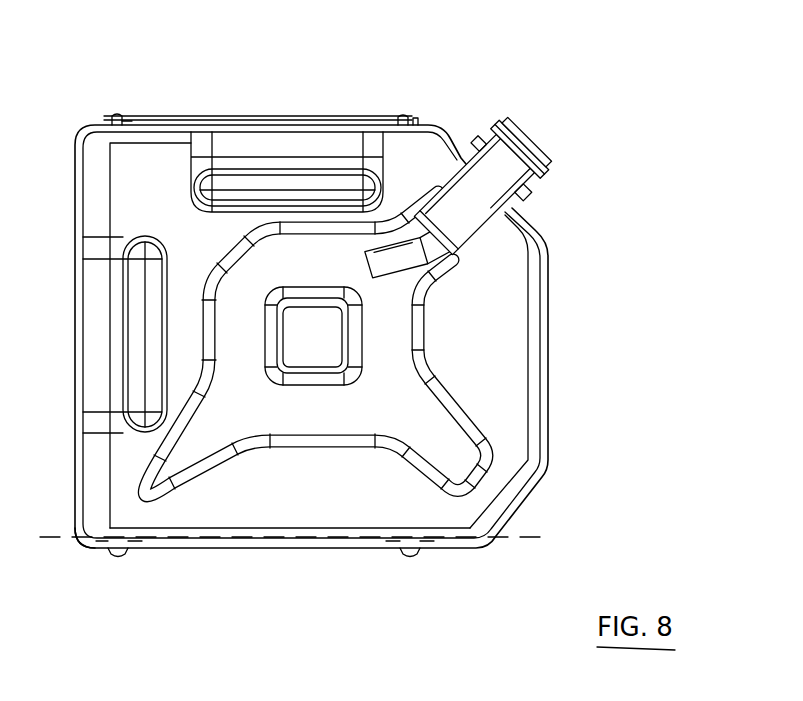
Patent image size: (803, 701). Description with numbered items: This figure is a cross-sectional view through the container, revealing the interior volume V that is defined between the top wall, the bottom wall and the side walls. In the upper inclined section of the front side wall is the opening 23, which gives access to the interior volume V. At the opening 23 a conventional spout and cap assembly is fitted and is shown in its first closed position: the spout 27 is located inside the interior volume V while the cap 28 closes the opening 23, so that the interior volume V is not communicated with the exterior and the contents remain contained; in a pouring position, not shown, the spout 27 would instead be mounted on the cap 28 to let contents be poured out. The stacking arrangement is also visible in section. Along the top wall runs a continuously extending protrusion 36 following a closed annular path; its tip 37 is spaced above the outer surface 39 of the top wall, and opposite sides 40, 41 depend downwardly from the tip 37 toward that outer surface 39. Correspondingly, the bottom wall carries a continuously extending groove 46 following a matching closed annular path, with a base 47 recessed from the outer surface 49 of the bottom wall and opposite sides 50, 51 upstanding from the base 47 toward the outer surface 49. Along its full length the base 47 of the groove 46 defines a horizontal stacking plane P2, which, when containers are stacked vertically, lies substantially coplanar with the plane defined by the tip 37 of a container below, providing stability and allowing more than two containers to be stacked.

The opening 23 is at (507, 212).
The spout 27 is at (452, 258).
The cap 28 is at (547, 199).
The protrusion 36 is at (420, 117).
The tip 37 is at (322, 116).
The outer surface of the top wall 39 is at (404, 119).
The side of the protrusion 40 is at (118, 119).
The side of the protrusion 41 is at (124, 119).
The groove 46 is at (118, 551).
The base 47 is at (117, 538).
The outer surface of the bottom wall 49 is at (214, 552).
The side of the groove 50 is at (111, 543).
The side of the groove 51 is at (140, 543).
The interior volume V is at (489, 345).
The horizontal stacking plane P2 is at (43, 541).